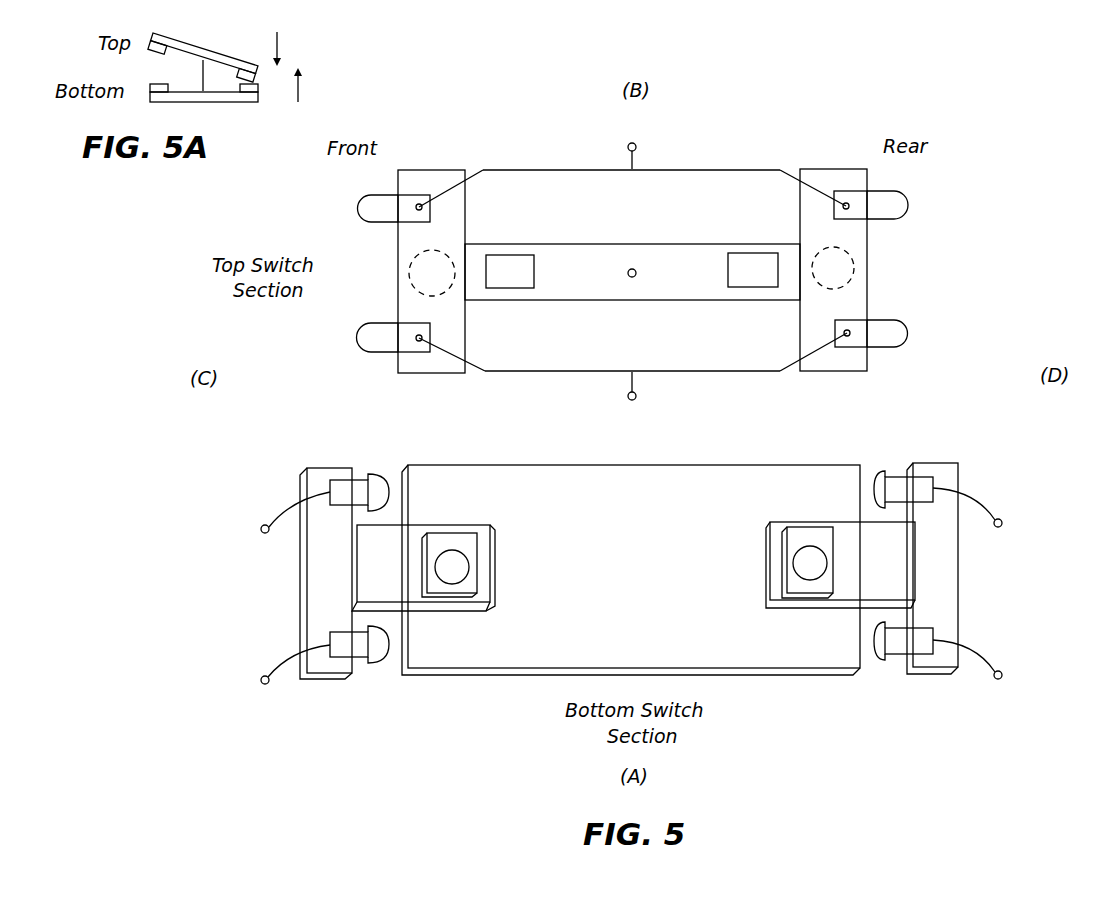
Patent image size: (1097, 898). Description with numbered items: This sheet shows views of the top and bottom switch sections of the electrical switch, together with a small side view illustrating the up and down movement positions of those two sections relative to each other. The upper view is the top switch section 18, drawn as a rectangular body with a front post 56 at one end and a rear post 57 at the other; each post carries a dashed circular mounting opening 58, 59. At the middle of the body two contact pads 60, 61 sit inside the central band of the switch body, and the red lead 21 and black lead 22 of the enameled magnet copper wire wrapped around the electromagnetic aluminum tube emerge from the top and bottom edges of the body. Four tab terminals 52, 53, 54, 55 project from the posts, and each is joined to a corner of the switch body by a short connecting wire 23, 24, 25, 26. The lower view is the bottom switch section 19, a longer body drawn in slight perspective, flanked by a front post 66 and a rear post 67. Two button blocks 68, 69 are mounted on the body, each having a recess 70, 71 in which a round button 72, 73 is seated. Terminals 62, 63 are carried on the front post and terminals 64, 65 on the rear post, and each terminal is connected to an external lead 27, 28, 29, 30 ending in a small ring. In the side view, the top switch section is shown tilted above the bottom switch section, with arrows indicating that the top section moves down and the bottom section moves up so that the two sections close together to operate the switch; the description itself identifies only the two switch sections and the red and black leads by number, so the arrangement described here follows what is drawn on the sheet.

The top switch section 18 is at (709, 285).
The bottom switch section 19 is at (640, 650).
The red lead 21 is at (628, 141).
The black lead 22 is at (635, 403).
The connecting wire 23 is at (478, 173).
The connecting wire 24 is at (793, 178).
The connecting wire 25 is at (475, 373).
The connecting wire 26 is at (789, 374).
The lead wire 27 is at (261, 529).
The lead wire 28 is at (261, 680).
The lead wire 29 is at (1002, 523).
The lead wire 30 is at (1002, 675).
The terminal 52 is at (393, 219).
The terminal 53 is at (393, 348).
The terminal 54 is at (897, 216).
The terminal 55 is at (898, 345).
The front post 56 is at (459, 244).
The rear post 57 is at (831, 240).
The mounting hole 58 is at (398, 265).
The mounting hole 59 is at (867, 263).
The contact pad 60 is at (522, 284).
The contact pad 61 is at (765, 282).
The terminal 62 is at (364, 505).
The terminal 63 is at (364, 657).
The terminal 64 is at (926, 502).
The terminal 65 is at (926, 654).
The front post 66 is at (339, 580).
The rear post 67 is at (952, 577).
The button block 68 is at (400, 580).
The button block 69 is at (889, 577).
The button recess 70 is at (484, 528).
The button recess 71 is at (780, 527).
The button 72 is at (462, 577).
The button 73 is at (820, 573).